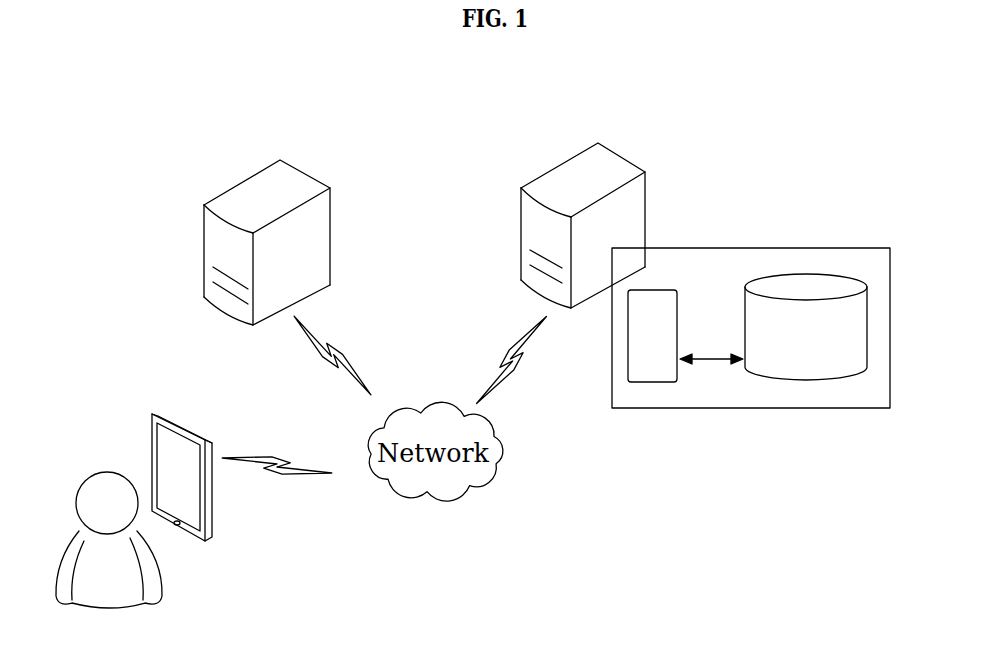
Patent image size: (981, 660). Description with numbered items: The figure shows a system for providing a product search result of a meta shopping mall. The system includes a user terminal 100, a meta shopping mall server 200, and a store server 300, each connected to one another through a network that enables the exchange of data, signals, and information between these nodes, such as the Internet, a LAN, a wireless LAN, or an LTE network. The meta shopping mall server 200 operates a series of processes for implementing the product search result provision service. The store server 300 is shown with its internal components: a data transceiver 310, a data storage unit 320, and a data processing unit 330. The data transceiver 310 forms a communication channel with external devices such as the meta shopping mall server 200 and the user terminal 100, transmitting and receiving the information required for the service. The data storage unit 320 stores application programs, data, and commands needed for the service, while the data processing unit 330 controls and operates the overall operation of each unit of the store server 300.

The user terminal 100 is at (158, 412).
The meta shopping mall server 200 is at (258, 191).
The store server 300 is at (566, 184).
The data transceiver 310 is at (655, 288).
The data storage unit 320 is at (805, 382).
The data processing unit 330 is at (783, 248).